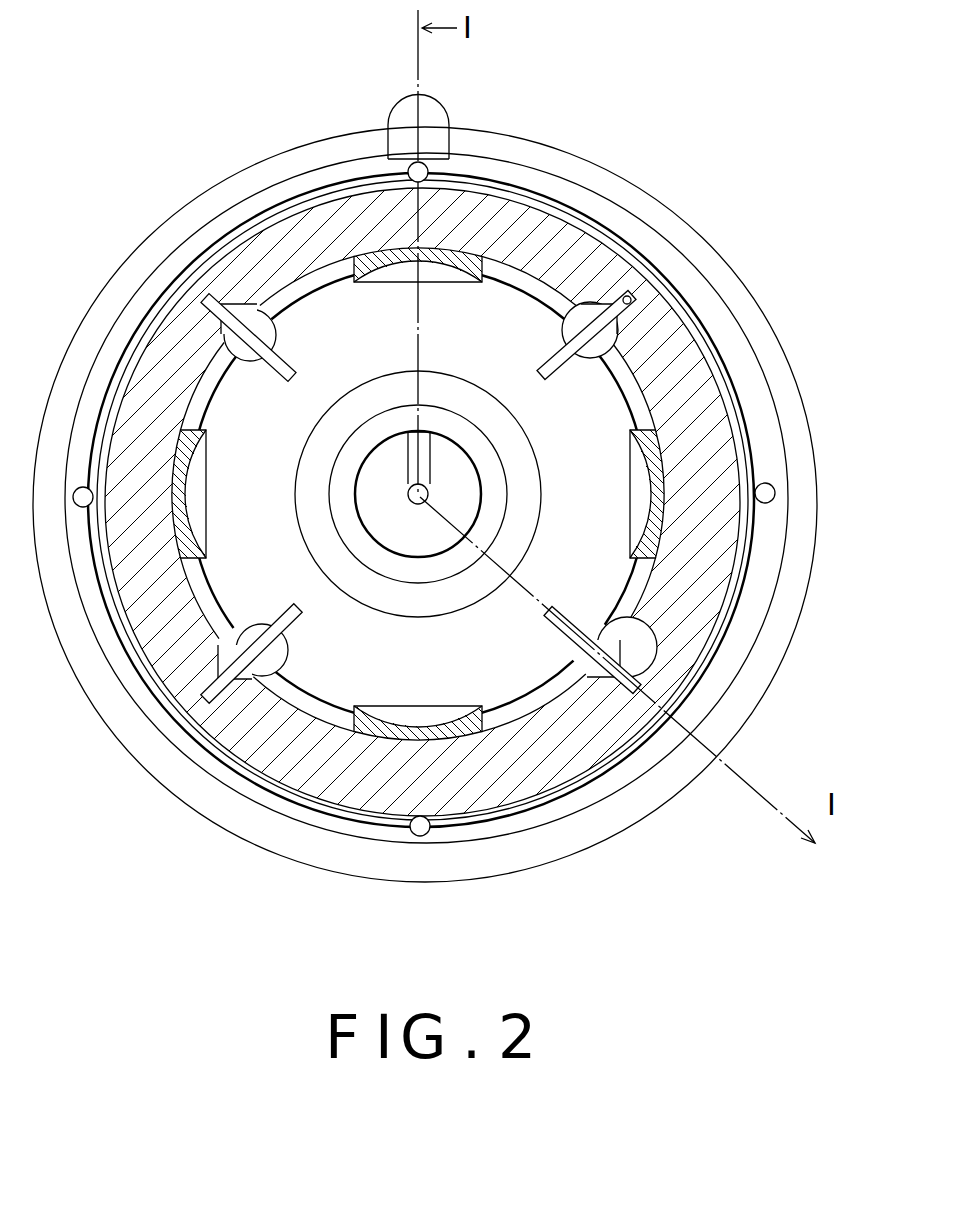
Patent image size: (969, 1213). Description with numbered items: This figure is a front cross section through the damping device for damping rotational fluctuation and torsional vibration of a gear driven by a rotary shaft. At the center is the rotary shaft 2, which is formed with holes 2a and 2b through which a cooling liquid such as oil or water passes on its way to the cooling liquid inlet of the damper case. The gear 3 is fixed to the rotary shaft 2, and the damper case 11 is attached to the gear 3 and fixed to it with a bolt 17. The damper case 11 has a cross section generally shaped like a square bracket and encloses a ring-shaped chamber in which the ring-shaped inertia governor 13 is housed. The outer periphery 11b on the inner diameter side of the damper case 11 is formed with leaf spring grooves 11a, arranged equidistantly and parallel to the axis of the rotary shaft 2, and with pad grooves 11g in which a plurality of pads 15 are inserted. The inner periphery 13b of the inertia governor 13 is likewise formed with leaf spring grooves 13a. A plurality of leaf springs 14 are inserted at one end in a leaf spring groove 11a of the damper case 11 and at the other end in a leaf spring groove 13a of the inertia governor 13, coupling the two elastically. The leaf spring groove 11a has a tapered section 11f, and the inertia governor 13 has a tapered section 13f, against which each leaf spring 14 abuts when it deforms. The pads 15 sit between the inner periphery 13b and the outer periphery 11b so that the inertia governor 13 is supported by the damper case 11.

The rotary shaft 2 is at (357, 488).
The hole 2a is at (428, 495).
The hole 2b is at (412, 440).
The gear 3 is at (797, 553).
The damper case 11 is at (517, 317).
The leaf spring groove 11a is at (562, 622).
The outer periphery 11b is at (320, 705).
The tapered section 11f is at (583, 655).
The pad groove 11g is at (363, 247).
The inertia governor 13 is at (470, 210).
The leaf spring groove 13a is at (600, 690).
The inner periphery 13b is at (215, 615).
The tapered section 13f is at (640, 617).
The leaf spring 14 is at (638, 301).
The pad 15 is at (652, 435).
The bolt 17 is at (767, 491).